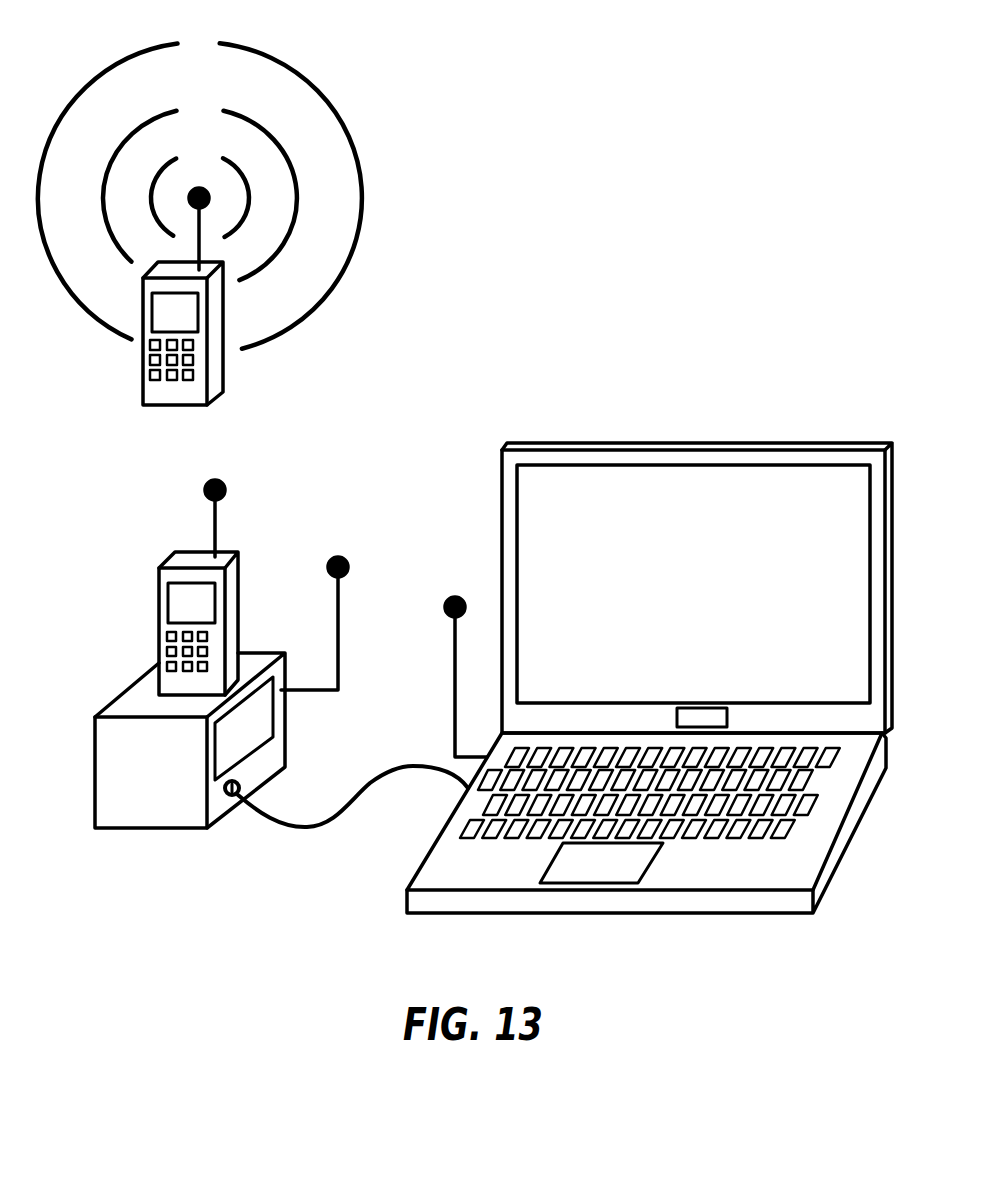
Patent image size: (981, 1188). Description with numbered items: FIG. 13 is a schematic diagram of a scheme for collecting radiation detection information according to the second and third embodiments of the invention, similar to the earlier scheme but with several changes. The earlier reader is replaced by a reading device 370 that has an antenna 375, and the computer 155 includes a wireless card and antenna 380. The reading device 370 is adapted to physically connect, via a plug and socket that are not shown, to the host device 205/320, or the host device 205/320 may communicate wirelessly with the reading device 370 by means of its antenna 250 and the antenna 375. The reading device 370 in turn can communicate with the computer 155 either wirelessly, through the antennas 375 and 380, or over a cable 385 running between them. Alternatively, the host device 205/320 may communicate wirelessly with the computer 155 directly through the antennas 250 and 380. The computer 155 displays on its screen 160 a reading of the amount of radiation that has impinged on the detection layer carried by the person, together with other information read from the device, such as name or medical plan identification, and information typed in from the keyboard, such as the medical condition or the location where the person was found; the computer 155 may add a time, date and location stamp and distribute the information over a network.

The host device 205 is at (334, 366).
The host device 320 is at (415, 105).
The antenna 250 is at (207, 205).
The reading device 370 is at (167, 813).
The antenna 375 is at (341, 594).
The wireless card and antenna 380 is at (452, 673).
The cable 385 is at (377, 780).
The screen 160 is at (836, 686).
The computer 155 is at (649, 678).